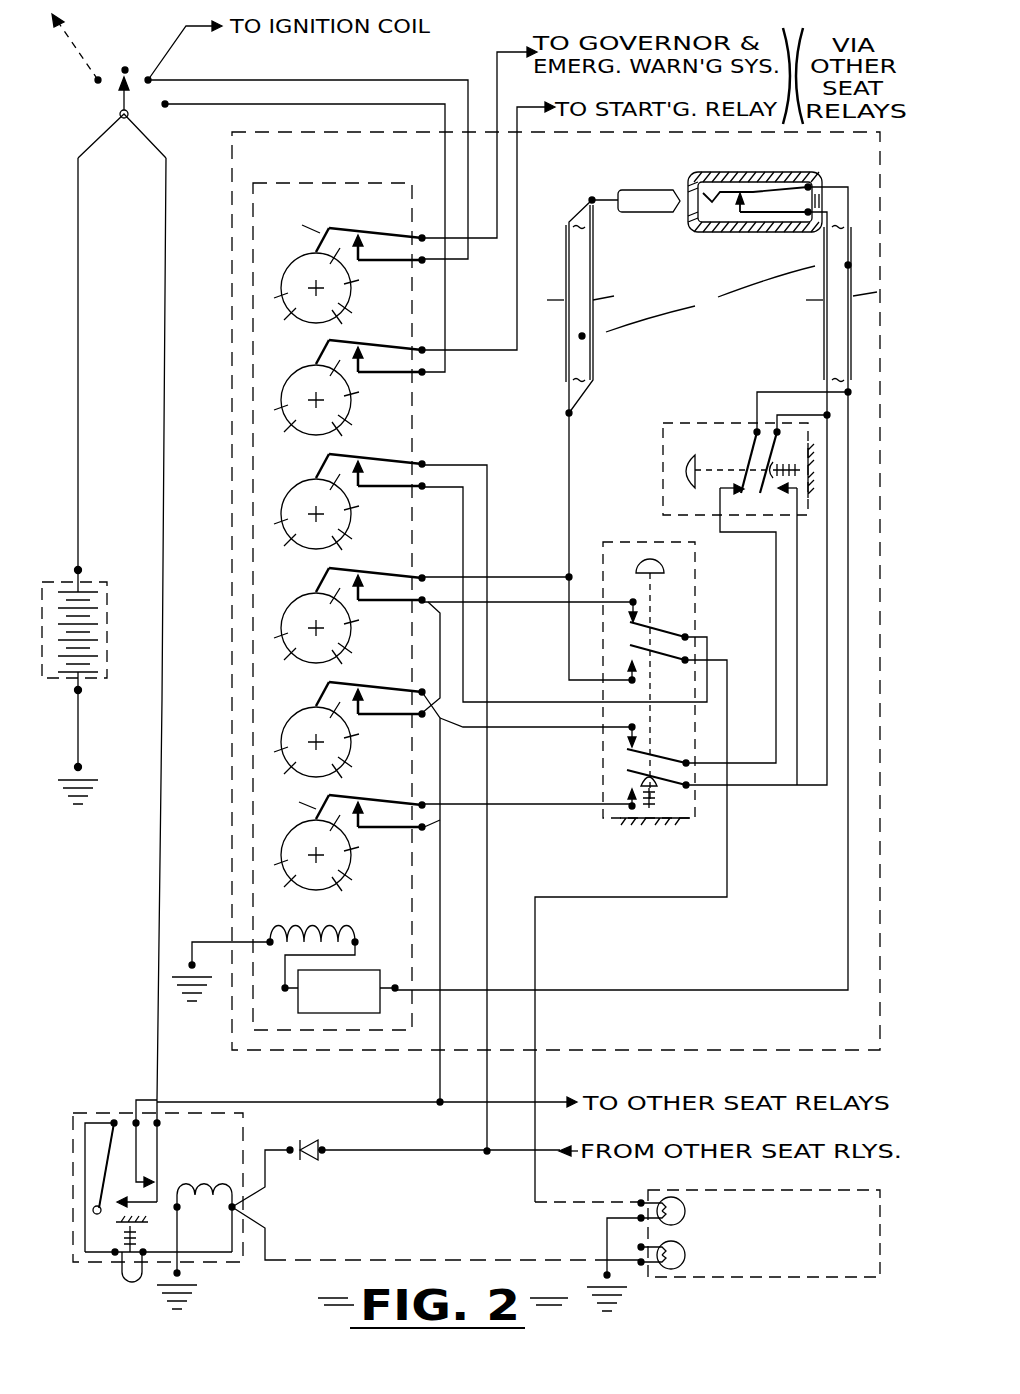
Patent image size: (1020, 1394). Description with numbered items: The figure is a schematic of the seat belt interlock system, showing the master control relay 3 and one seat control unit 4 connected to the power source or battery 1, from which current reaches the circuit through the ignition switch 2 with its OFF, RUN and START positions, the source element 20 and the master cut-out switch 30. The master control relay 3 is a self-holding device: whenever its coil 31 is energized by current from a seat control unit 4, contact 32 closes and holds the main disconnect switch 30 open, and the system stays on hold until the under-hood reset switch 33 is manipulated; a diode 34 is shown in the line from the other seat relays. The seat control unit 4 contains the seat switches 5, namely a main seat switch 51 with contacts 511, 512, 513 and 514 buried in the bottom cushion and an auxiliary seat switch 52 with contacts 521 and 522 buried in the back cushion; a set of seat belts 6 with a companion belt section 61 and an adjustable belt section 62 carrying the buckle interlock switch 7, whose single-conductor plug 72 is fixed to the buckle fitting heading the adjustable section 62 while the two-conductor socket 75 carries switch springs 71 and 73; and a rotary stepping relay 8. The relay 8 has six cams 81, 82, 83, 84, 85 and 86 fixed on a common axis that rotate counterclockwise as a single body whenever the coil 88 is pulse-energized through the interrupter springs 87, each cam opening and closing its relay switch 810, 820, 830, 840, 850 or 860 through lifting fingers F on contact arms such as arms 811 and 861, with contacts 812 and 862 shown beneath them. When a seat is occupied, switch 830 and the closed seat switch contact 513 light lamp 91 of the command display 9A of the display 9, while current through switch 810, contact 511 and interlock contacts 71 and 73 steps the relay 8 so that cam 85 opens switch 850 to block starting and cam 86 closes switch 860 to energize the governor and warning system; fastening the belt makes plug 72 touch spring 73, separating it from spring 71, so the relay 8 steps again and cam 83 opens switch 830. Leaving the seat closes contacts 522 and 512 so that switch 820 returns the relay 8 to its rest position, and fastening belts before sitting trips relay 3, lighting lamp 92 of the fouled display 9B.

The battery 1 is at (108, 583).
The ignition switch 2 is at (110, 110).
The source element 20 is at (125, 120).
The master control relay 3 is at (155, 1208).
The master cut-out switch 30 is at (148, 1152).
The coil 31 is at (197, 1188).
The contact 32 is at (120, 1172).
The reset switch 33 is at (130, 1278).
The diode 34 is at (306, 1147).
The seat control unit 4 is at (229, 1050).
The seat switches 5 is at (681, 598).
The main seat switch 51 is at (603, 655).
The seat switch contact 511 is at (625, 776).
The seat switch contact 512 is at (640, 748).
The seat switch contact 513 is at (630, 656).
The relay contact 514 is at (640, 618).
The auxiliary seat switch 52 is at (756, 578).
The relay contact blade 521 is at (770, 492).
The seat switch contact 522 is at (742, 478).
The seat belts 6 is at (710, 299).
The switch coil 61 is at (849, 265).
The adjustable belt section 62 is at (580, 336).
The buckle interlock switch 7 is at (730, 203).
The switch spring 71 is at (746, 222).
The interlock plug 72 is at (656, 189).
The switch spring 73 is at (735, 191).
The socket 75 is at (806, 172).
The relay 8 is at (336, 183).
The cam 81 is at (340, 836).
The relay switch 810 is at (377, 798).
The switch contact arm 811 is at (316, 791).
The switch contact 812 is at (389, 833).
The cam 82 is at (341, 729).
The relay switch 820 is at (377, 683).
The cam 83 is at (341, 615).
The relay switch 830 is at (377, 569).
The cam 84 is at (341, 501).
The relay switch 840 is at (377, 455).
The cam 85 is at (341, 387).
The relay switch 850 is at (377, 341).
The cam 86 is at (341, 268).
The relay switch 860 is at (377, 229).
The switch contact arm 861 is at (318, 224).
The switch contact 862 is at (389, 265).
The interrupter springs 87 is at (368, 970).
The coil 88 is at (356, 930).
The command and condition display 9 is at (755, 1244).
The command display 9A is at (712, 1213).
The fouled condition display 9B is at (717, 1258).
The lamp 91 is at (677, 1197).
The lamp 92 is at (672, 1270).